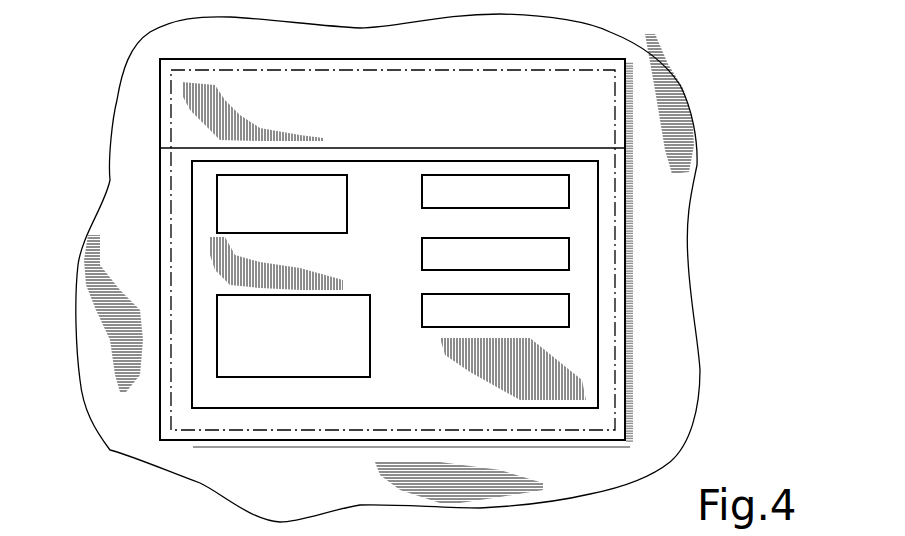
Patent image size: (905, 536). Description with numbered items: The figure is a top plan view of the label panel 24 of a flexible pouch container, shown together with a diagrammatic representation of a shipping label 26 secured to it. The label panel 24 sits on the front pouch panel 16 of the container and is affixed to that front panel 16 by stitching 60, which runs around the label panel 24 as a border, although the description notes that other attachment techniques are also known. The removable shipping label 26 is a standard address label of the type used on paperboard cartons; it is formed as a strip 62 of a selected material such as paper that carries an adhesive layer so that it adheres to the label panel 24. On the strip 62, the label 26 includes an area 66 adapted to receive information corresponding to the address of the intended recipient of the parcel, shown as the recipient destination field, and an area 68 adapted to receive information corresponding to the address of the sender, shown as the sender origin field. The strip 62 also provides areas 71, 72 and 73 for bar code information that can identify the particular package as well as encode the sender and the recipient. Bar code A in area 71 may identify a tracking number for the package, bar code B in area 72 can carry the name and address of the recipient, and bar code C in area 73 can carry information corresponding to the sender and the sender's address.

The front pouch panel 16 is at (388, 268).
The label panel 24 is at (582, 100).
The shipping label 26 is at (582, 367).
The stitching 60 is at (613, 208).
The strip 62 is at (587, 338).
The recipient address area 66 is at (353, 368).
The sender address area 68 is at (334, 193).
The bar code A area 71 is at (425, 189).
The bar code B area 72 is at (431, 252).
The bar code C area 73 is at (432, 318).